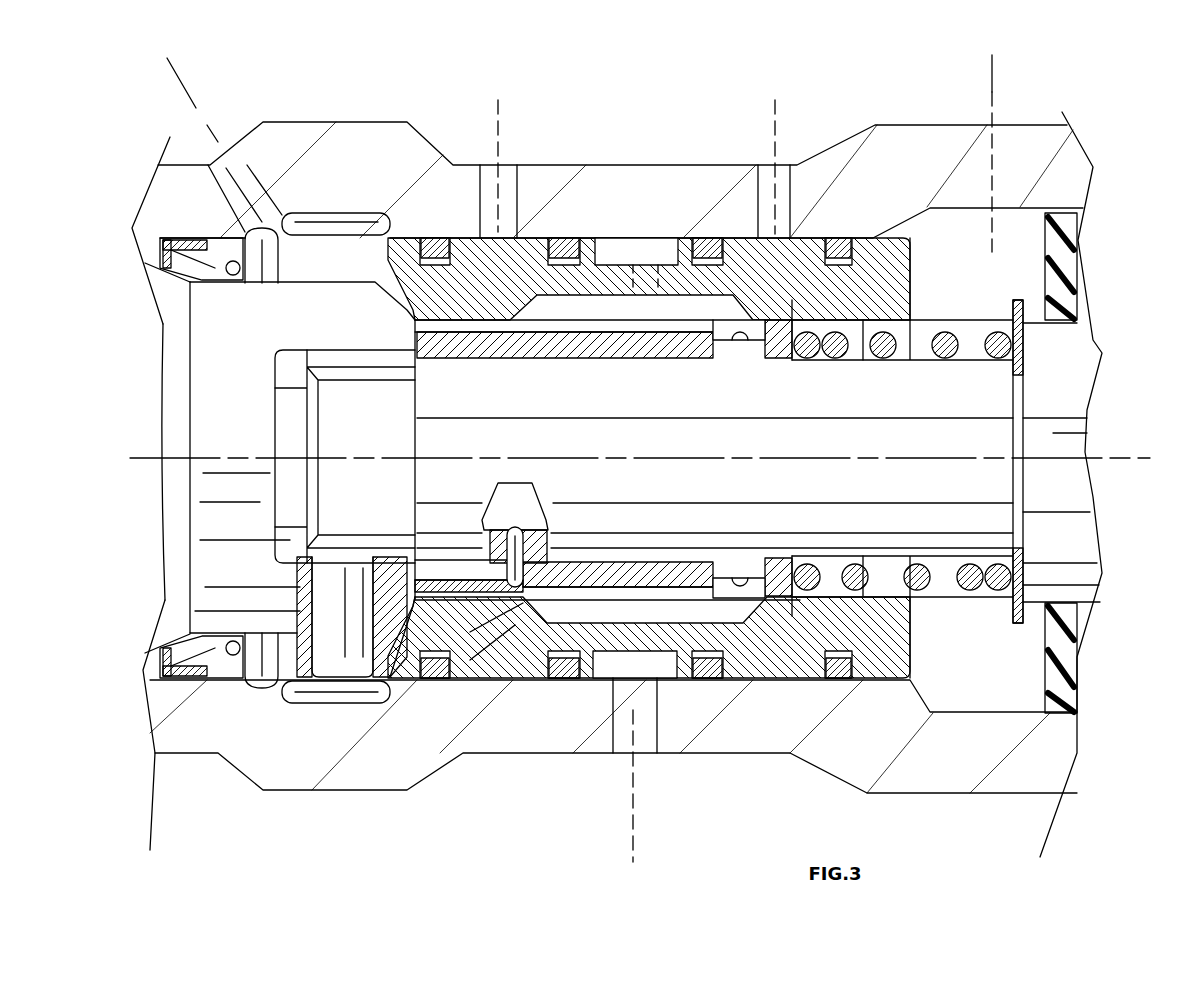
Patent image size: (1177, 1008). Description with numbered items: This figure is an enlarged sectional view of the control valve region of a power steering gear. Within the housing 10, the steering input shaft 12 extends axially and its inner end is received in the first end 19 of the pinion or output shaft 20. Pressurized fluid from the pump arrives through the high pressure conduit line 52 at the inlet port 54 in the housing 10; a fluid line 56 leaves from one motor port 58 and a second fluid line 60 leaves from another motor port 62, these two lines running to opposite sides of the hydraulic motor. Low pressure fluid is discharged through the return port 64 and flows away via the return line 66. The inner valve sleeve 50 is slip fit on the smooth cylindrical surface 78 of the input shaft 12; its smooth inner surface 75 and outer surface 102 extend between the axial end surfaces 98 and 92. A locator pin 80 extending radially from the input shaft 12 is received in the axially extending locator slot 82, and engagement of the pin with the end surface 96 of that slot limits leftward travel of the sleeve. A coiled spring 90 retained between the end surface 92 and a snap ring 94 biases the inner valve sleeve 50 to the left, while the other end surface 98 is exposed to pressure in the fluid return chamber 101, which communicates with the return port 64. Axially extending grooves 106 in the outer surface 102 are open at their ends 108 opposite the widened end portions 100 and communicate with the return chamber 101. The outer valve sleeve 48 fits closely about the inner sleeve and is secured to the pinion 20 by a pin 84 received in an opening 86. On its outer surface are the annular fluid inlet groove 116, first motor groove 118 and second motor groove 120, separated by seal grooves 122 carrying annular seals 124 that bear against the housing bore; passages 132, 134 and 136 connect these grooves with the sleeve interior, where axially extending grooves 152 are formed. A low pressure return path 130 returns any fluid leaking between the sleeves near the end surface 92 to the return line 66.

The housing 10 is at (950, 140).
The steering input shaft 12 is at (1060, 400).
The first end of the pinion 19 is at (341, 323).
The pinion or output shaft 20 is at (230, 500).
The outer valve sleeve 48 is at (600, 305).
The inner valve sleeve 50 is at (647, 347).
The high pressure fluid conduit line 52 is at (632, 843).
The inlet port 54 is at (648, 745).
The fluid line 56 is at (500, 132).
The motor port 58 is at (507, 177).
The second fluid line 60 is at (775, 108).
The motor port 62 is at (767, 187).
The return port 64 is at (250, 170).
The return line 66 is at (190, 93).
The inner surface of the inner valve sleeve 75 is at (543, 360).
The smooth cylindrical surface of the input shaft 78 is at (443, 363).
The locator pin 80 is at (552, 530).
The locator slot 82 is at (493, 563).
The pin 84 is at (330, 590).
The opening 86 is at (290, 698).
The coiled spring 90 is at (970, 590).
The axial end surface of the inner valve sleeve 92 is at (858, 350).
The snap ring 94 is at (1025, 623).
The end surface of the locator slot 96 is at (600, 563).
The other axial end surface of the inner valve sleeve 98 is at (383, 353).
The widened end portions 100 is at (760, 343).
The fluid return chamber 101 is at (325, 272).
The outer surface of the inner valve sleeve 102 is at (863, 318).
The axially extending grooves 106 is at (565, 375).
The open ends of the grooves 108 is at (330, 330).
The fluid inlet groove 116 is at (617, 305).
The first motor groove 118 is at (550, 243).
The second motor groove 120 is at (783, 245).
The annular seal grooves 122 is at (537, 265).
The annular seal 124 is at (430, 237).
The low pressure fluid return path 130 is at (992, 90).
The passage 132 is at (683, 337).
The passage 134 is at (507, 650).
The passage 136 is at (803, 238).
The axially extending grooves 152 is at (735, 342).